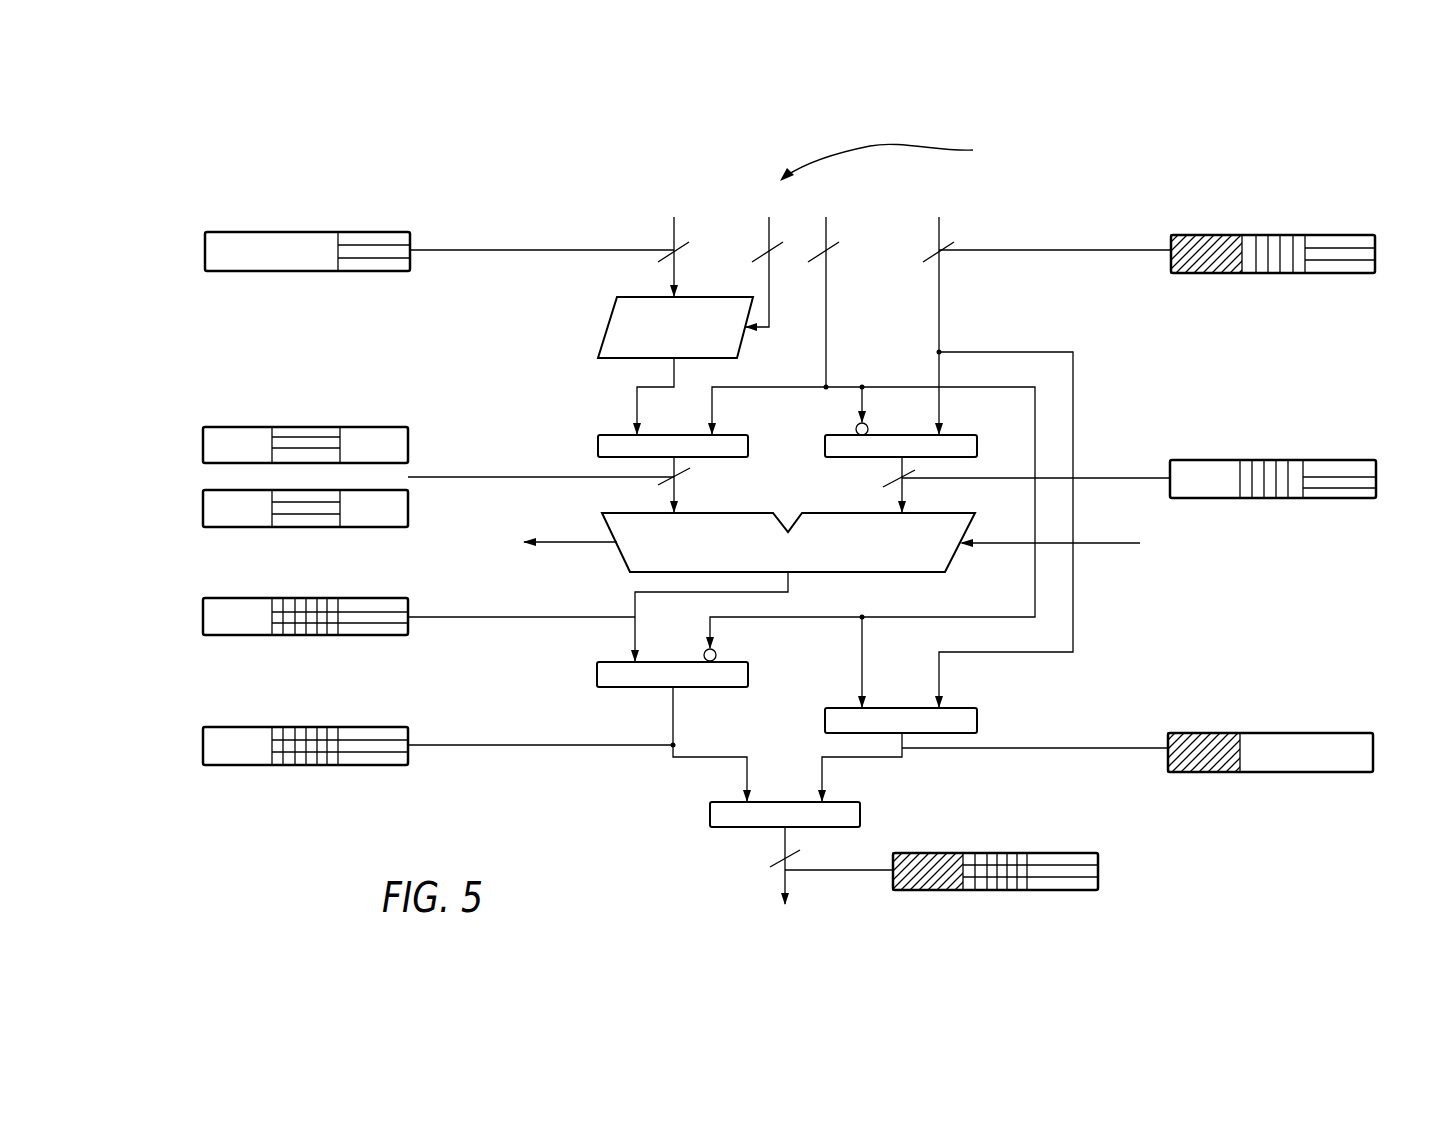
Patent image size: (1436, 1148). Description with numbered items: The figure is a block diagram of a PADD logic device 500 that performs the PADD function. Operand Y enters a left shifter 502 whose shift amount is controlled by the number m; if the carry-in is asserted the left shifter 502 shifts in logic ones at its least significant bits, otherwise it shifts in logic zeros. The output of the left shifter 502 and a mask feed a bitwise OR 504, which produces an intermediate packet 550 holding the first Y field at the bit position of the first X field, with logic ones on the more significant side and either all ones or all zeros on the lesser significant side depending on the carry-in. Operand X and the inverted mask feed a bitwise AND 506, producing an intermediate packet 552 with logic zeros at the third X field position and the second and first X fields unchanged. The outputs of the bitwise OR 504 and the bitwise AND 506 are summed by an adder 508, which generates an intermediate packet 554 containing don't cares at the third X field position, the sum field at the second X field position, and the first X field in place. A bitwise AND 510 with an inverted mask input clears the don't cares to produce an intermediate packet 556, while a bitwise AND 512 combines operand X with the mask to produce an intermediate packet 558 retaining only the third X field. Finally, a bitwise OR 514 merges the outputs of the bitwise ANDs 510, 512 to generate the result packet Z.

The PADD logic device 500 is at (410, 194).
The left shifter 502 is at (607, 322).
The bitwise OR 504 is at (598, 447).
The bitwise AND 506 is at (825, 447).
The adder 508 is at (622, 513).
The bitwise AND 510 is at (597, 672).
The bitwise AND 512 is at (825, 720).
The bitwise OR 514 is at (710, 815).
The intermediate packet 550 is at (353, 427).
The intermediate packet 552 is at (1293, 460).
The intermediate packet 554 is at (323, 598).
The intermediate packet 556 is at (322, 727).
The intermediate packet 558 is at (1290, 733).